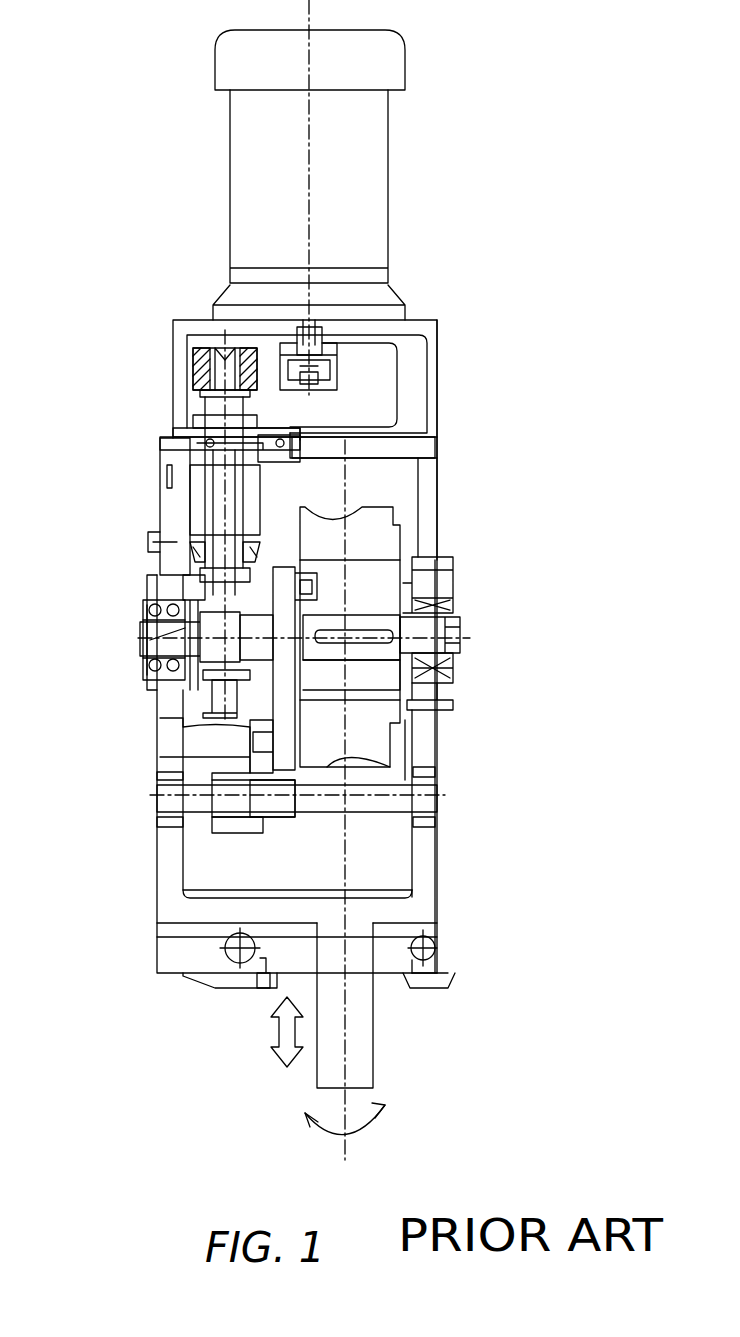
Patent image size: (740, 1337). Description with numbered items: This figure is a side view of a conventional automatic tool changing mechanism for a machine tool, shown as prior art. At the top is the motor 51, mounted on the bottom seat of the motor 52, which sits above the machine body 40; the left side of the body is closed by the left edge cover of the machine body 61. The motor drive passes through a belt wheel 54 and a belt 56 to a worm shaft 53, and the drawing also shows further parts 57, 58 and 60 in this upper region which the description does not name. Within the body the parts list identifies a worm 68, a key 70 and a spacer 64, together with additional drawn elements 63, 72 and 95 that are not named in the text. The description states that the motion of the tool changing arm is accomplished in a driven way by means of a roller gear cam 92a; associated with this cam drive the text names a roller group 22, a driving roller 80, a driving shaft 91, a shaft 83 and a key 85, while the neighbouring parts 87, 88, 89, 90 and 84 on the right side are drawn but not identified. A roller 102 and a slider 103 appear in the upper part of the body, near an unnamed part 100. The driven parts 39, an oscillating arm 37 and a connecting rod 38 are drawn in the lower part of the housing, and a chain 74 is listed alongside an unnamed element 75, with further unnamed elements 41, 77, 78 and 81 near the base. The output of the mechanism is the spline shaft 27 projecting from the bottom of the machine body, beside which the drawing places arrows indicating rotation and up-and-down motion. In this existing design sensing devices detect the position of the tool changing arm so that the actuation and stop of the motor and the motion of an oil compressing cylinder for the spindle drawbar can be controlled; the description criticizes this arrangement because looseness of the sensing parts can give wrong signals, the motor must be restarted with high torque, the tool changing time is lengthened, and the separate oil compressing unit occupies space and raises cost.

The motor 51 is at (277, 185).
The bottom seat of the motor 52 is at (215, 325).
The worm shaft 53 is at (200, 345).
The belt wheel 54 is at (195, 365).
The belt 56 is at (200, 395).
The input shaft 57 is at (215, 424).
The bearing plate 58 is at (215, 452).
The drive shaft 60 is at (200, 490).
The left edge cover of the machine body 61 is at (155, 563).
The ball bearing 63 is at (150, 615).
The spacer 64 is at (140, 636).
The worm 68 is at (215, 700).
The key 70 is at (202, 672).
The bearing 72 is at (170, 830).
The hub 95 is at (162, 612).
The oscillating arm 37 is at (245, 762).
The connecting rod 38 is at (240, 732).
The driven parts 39 is at (200, 795).
The machine body 40 is at (175, 875).
The gear 41 is at (327, 660).
The roller group 22 is at (350, 530).
The driving roller 80 is at (305, 570).
The roller gear cam 92a is at (340, 513).
The bracket 100 is at (293, 428).
The roller 102 is at (332, 370).
The slider 103 is at (332, 320).
The bearing 88 is at (455, 610).
The retaining ring 89 is at (457, 693).
The bearing 90 is at (455, 675).
The driving shaft 91 is at (460, 637).
The housing wall 87 is at (407, 703).
The key 85 is at (437, 715).
The bearing 84 is at (415, 773).
The shaft 83 is at (433, 827).
The chain 74 is at (205, 835).
The gear 75 is at (255, 820).
The foot 77 is at (232, 982).
The pin 78 is at (262, 985).
The foot 81 is at (440, 985).
The spline shaft 27 is at (353, 1025).